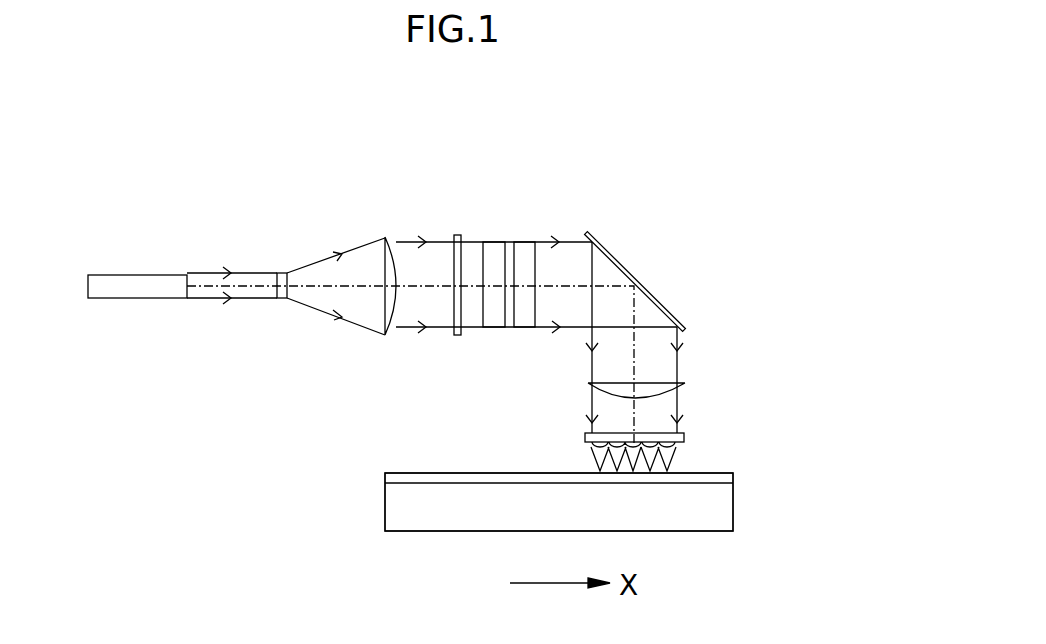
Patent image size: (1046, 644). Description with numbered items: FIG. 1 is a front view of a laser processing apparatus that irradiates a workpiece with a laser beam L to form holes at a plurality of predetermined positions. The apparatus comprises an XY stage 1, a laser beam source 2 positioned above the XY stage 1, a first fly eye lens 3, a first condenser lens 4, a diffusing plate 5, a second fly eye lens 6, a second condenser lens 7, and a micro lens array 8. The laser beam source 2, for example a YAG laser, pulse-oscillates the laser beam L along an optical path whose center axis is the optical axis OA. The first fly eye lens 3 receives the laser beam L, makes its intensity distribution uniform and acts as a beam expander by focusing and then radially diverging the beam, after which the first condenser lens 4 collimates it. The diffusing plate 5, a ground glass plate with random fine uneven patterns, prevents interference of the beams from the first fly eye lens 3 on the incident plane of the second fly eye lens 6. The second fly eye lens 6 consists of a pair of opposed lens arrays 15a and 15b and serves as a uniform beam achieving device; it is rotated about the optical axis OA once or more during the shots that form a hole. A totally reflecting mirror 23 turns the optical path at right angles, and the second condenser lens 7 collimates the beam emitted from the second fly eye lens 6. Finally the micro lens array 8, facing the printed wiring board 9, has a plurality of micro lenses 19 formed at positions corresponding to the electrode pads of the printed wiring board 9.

The XY stage 1 is at (407, 516).
The laser beam source 2 is at (130, 276).
The first fly eye lens 3 is at (284, 273).
The first condenser lens 4 is at (389, 237).
The diffusing plate 5 is at (456, 235).
The second fly eye lens 6 is at (664, 225).
The lens array 15a is at (491, 243).
The lens array 15b is at (534, 243).
The totally reflecting mirror 23 is at (622, 266).
The second condenser lens 7 is at (590, 384).
The micro lens array 8 is at (598, 433).
The micro lenses 19 is at (672, 468).
The printed wiring board 9 is at (385, 474).
The laser beam L is at (244, 300).
The optical axis OA is at (353, 285).